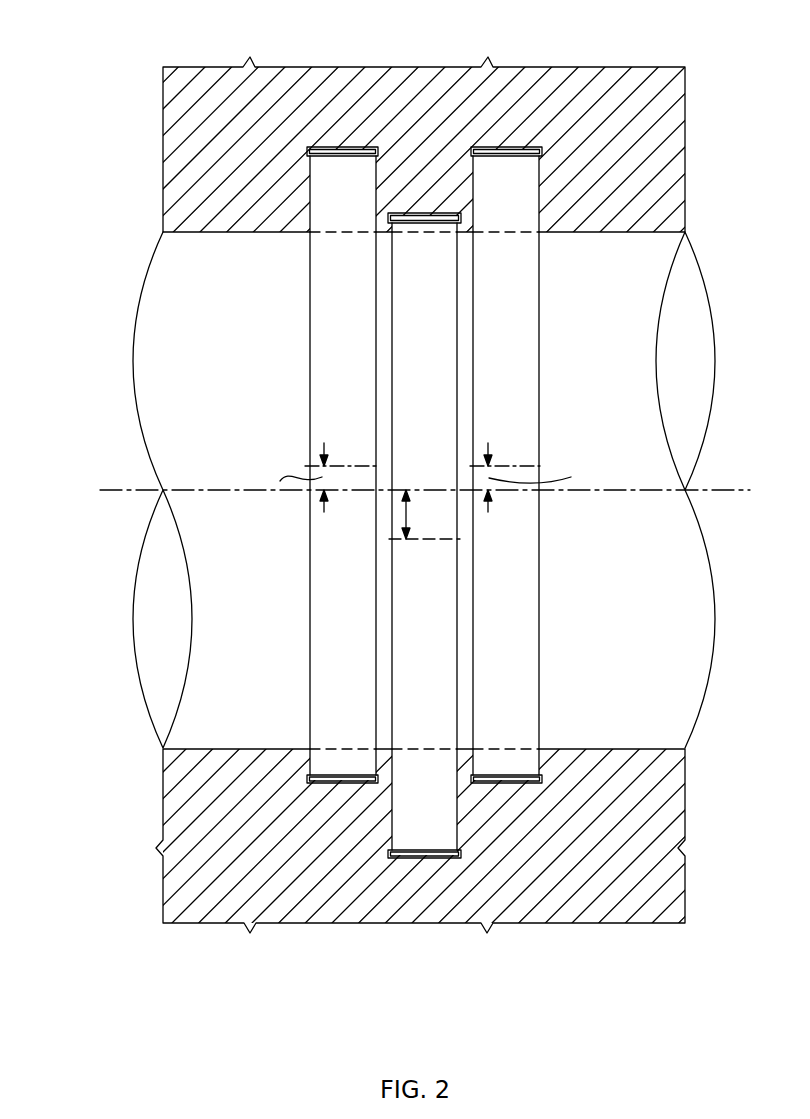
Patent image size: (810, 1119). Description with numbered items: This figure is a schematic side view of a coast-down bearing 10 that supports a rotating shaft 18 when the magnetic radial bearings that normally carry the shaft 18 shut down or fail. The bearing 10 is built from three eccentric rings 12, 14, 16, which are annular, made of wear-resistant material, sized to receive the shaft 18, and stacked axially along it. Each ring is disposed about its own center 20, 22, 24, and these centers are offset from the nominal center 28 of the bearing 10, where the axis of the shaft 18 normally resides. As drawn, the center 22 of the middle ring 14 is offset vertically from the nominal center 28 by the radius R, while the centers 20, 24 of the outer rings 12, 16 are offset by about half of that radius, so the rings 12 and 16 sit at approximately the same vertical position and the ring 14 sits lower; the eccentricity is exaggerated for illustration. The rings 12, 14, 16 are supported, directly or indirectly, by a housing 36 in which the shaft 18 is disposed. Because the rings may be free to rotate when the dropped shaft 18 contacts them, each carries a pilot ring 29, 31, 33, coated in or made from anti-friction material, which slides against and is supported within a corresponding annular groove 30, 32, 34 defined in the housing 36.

The coast-down bearing 10 is at (105, 46).
The eccentric ring 12 is at (330, 146).
The eccentric ring 14 is at (412, 213).
The eccentric ring 16 is at (497, 146).
The shaft 18 is at (152, 698).
The center 20 is at (366, 466).
The center 22 is at (440, 540).
The center 24 is at (530, 466).
The nominal center 28 is at (447, 490).
The pilot ring 29 is at (333, 775).
The annular groove 30 is at (333, 796).
The pilot ring 31 is at (412, 850).
The annular groove 32 is at (415, 869).
The pilot ring 33 is at (495, 775).
The annular groove 34 is at (527, 796).
The housing 36 is at (612, 885).